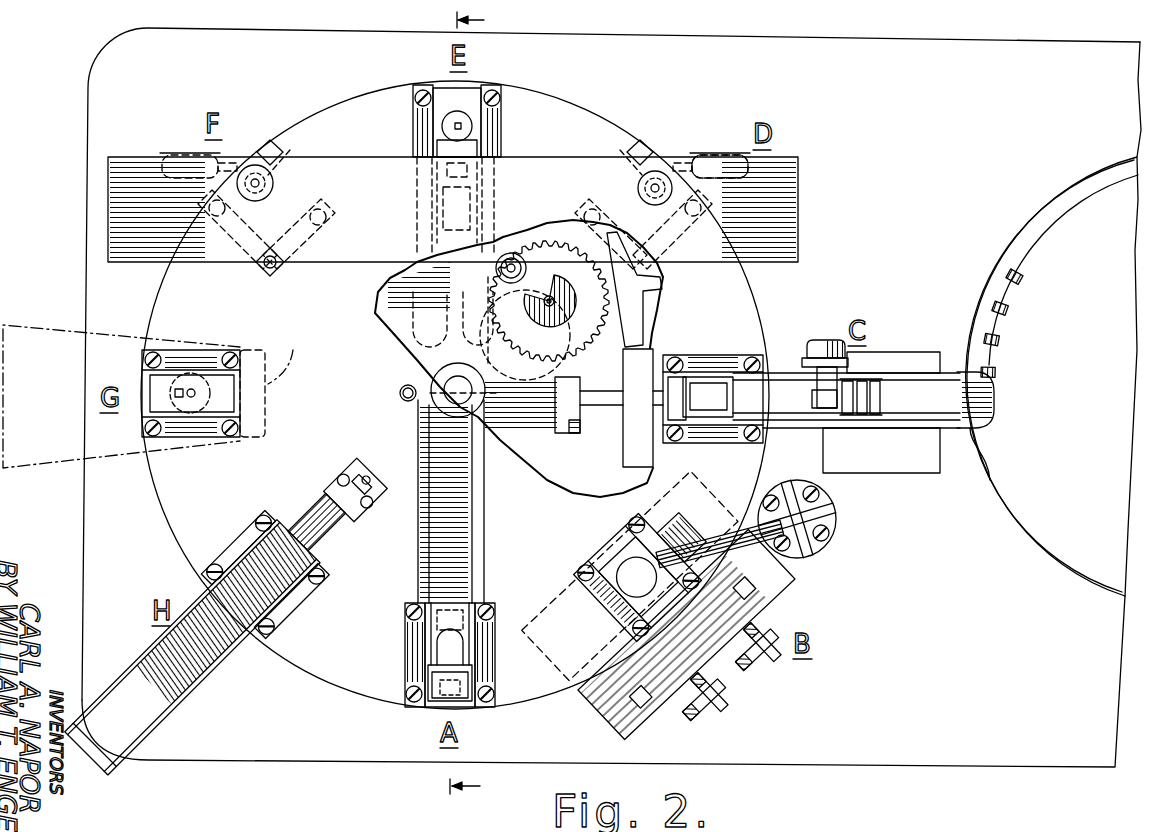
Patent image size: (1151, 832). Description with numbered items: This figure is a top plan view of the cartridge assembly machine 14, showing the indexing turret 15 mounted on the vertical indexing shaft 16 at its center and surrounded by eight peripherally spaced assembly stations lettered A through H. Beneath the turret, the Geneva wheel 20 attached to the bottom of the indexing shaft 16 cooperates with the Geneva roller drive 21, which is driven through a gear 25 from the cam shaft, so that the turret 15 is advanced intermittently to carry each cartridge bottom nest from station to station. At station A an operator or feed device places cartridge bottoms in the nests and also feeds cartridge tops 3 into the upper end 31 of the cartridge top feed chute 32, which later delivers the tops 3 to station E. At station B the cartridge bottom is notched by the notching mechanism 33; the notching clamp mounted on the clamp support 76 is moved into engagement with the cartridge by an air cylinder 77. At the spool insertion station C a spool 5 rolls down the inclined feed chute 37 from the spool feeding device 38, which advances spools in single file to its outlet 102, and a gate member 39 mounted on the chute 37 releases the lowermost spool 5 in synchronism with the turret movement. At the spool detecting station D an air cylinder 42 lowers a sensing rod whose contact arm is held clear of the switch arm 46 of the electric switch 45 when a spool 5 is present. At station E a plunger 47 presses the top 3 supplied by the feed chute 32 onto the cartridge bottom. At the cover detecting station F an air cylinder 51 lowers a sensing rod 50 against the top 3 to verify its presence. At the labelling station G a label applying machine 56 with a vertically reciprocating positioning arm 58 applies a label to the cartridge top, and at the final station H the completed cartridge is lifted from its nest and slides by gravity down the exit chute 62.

The cartridge top 3 is at (478, 404).
The spool 5 is at (882, 388).
The assembly machine 14 is at (620, 107).
The indexing turret 15 is at (745, 300).
The indexing shaft 16 is at (456, 398).
The Geneva wheel 20 is at (454, 297).
The Geneva roller drive 21 is at (515, 262).
The gear 25 is at (627, 313).
The upper end of cartridge top feed chute 31 is at (485, 583).
The cartridge top feed chute 32 is at (420, 141).
The feed mechanism 33 is at (832, 571).
The inclined feed chute 37 is at (913, 408).
The spool feeding device 38 is at (1083, 339).
The gate member 39 is at (810, 345).
The air cylinder 42 is at (659, 167).
The electric switch 45 is at (714, 165).
The switch arm 46 is at (691, 160).
The plunger 47 is at (455, 127).
The sensing rod 50 is at (299, 148).
The air cylinder 51 is at (256, 163).
The label applying machine 56 is at (37, 343).
The positioning arm 58 is at (289, 352).
The exit chute 62 is at (204, 672).
The clamp support 76 is at (713, 535).
The air cylinder 77 is at (630, 567).
The outlet 102 is at (962, 375).